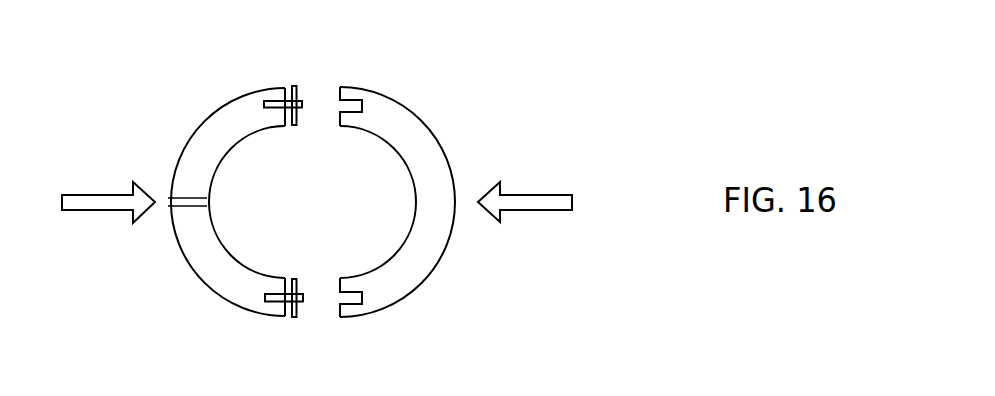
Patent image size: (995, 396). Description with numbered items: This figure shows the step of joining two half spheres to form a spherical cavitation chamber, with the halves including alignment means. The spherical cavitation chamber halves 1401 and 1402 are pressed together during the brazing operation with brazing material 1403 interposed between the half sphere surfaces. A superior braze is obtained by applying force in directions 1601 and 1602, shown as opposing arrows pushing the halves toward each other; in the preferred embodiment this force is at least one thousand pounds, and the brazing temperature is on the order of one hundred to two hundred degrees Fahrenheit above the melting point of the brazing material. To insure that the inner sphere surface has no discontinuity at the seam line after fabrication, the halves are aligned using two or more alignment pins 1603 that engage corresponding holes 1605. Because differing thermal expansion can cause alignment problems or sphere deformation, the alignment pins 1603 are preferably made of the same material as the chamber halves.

The spherical cavitation chamber half 1401 is at (158, 116).
The spherical cavitation chamber half 1402 is at (456, 121).
The brazing material 1403 is at (297, 93).
The direction of applied force 1601 is at (108, 218).
The direction of applied force 1602 is at (525, 217).
The alignment pin 1603 is at (302, 106).
The hole 1605 is at (352, 105).